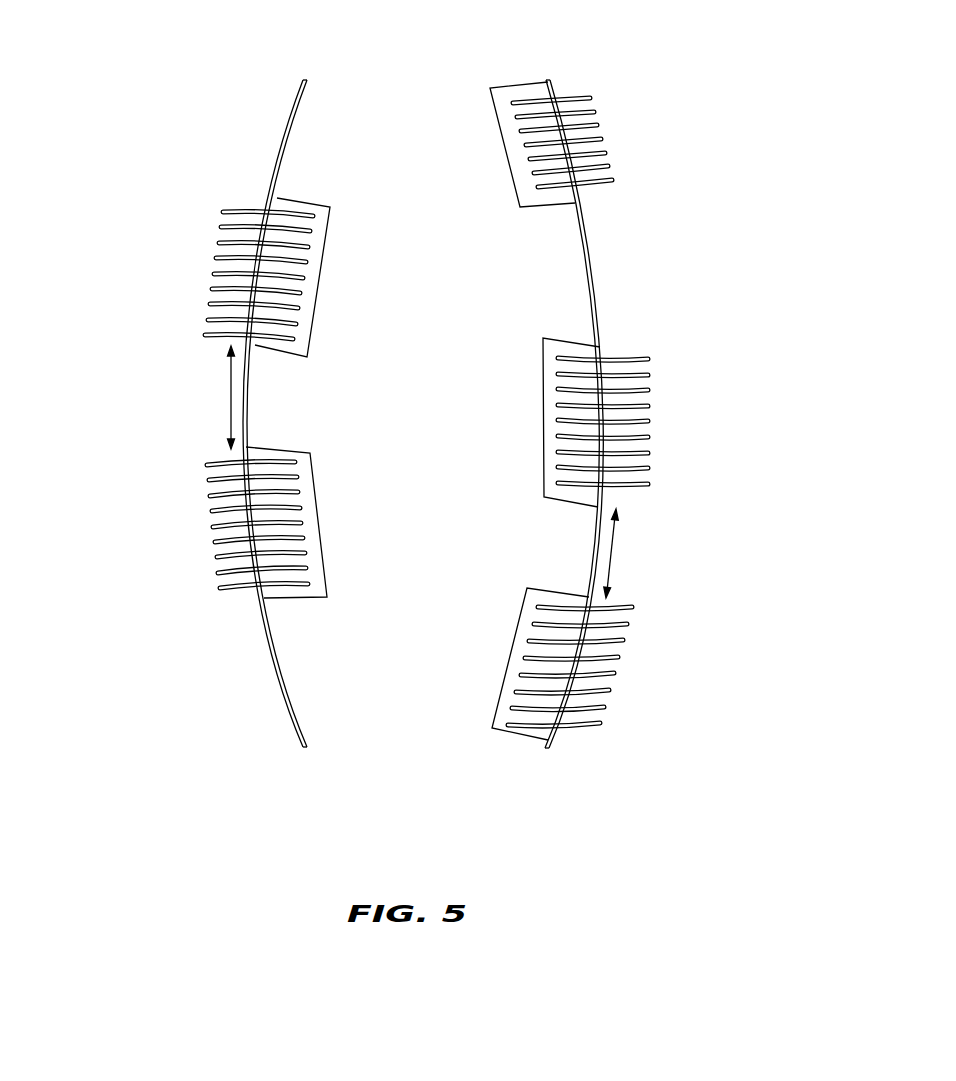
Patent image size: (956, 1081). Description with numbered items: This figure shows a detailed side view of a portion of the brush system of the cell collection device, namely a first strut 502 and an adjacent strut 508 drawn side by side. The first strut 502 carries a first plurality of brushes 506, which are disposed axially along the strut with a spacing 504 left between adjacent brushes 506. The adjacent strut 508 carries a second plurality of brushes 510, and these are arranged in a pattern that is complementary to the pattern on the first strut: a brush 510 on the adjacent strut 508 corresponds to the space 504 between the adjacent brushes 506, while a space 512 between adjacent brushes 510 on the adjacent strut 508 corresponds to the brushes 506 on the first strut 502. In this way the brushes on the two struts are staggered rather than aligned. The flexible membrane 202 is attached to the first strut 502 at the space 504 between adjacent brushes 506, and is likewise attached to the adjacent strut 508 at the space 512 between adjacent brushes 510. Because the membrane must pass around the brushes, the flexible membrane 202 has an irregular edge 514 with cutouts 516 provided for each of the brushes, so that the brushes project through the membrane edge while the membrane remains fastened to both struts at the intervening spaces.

The flexible membrane 202 is at (453, 408).
The first strut 502 is at (598, 567).
The spacing 504 is at (616, 543).
The brushes 506 is at (648, 392).
The adjacent strut 508 is at (277, 673).
The brush 510 is at (220, 257).
The space 512 is at (230, 396).
The irregular edge 514 is at (552, 206).
The cutouts 516 is at (520, 93).